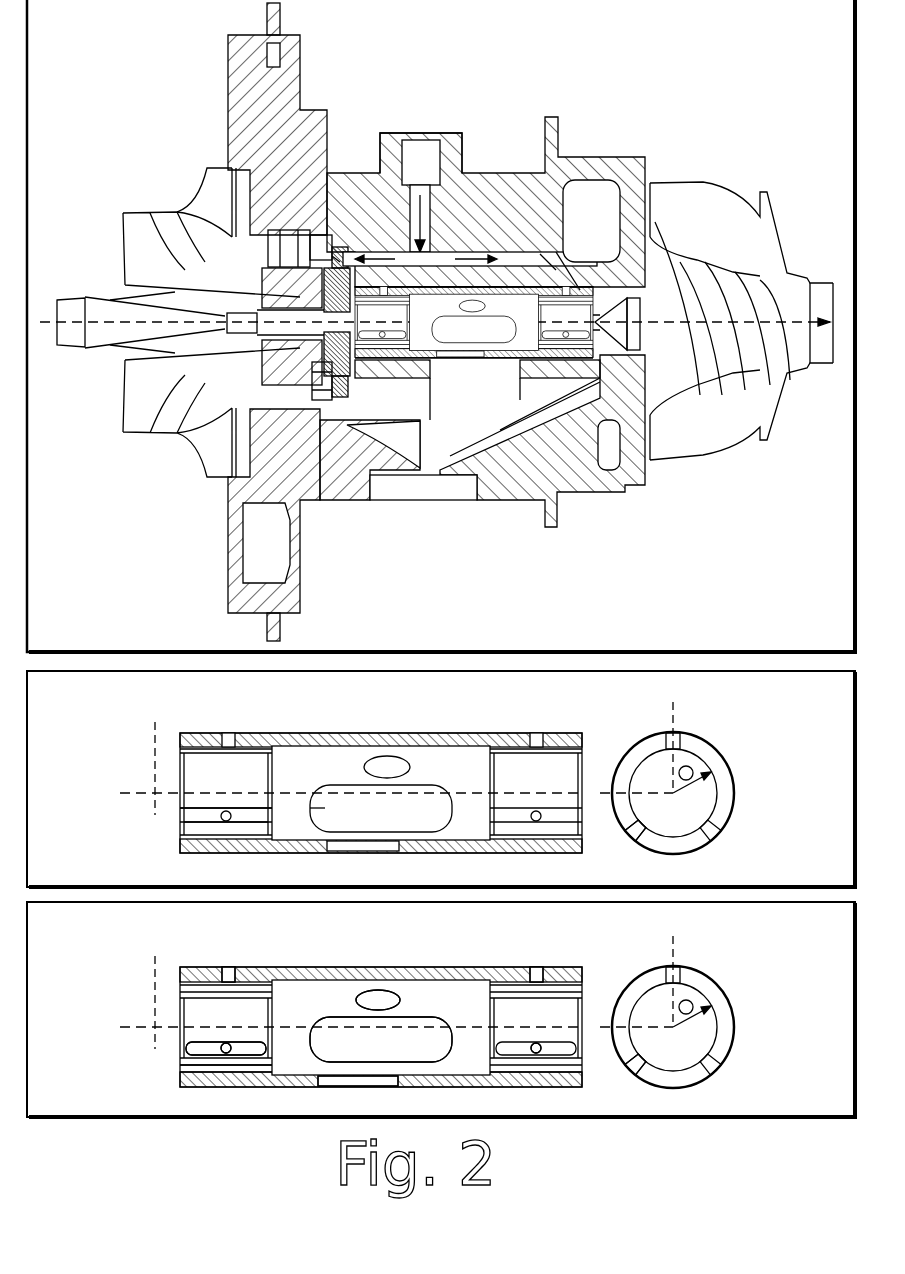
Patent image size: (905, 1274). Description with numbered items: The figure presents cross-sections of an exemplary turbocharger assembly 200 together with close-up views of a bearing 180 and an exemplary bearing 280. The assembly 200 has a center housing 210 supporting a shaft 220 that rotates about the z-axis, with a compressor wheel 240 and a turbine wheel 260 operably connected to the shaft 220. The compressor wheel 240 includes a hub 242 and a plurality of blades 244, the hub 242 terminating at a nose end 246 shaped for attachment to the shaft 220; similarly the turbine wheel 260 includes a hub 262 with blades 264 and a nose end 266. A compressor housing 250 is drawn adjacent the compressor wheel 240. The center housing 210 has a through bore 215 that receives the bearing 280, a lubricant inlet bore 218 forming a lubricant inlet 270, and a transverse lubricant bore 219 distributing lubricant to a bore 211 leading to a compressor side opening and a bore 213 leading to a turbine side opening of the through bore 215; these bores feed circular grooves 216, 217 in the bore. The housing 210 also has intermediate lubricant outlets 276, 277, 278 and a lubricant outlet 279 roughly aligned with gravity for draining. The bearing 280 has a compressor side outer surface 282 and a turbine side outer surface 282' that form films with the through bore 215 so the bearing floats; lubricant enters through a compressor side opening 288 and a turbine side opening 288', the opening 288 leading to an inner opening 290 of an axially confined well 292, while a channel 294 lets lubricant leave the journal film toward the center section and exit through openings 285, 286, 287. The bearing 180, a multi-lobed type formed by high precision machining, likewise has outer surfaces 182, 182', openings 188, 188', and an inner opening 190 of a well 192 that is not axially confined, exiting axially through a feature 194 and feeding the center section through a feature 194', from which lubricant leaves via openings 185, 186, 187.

The turbocharger assembly 200 is at (172, 62).
The compressor wheel 240 is at (125, 158).
The blades 244 is at (171, 258).
The hub 242 is at (209, 308).
The nose end 246 is at (63, 355).
The compressor housing 250 is at (232, 130).
The center housing 210 is at (389, 220).
The bore 211 is at (410, 262).
The through bore 215 is at (345, 258).
The circular groove 216 is at (378, 372).
The lubricant inlet 270 is at (433, 122).
The lubricant inlet bore 218 is at (439, 168).
The transverse lubricant bore 219 is at (545, 240).
The bore 213 is at (557, 228).
The shaft 220 is at (324, 333).
The intermediate lubricant outlet 276 is at (352, 385).
The circular groove 217 is at (522, 370).
The exemplary bearing 280 is at (447, 365).
The intermediate lubricant outlet 278 is at (438, 380).
The intermediate lubricant outlet 277 is at (598, 388).
The lubricant outlet 279 is at (450, 525).
The turbine wheel 260 is at (718, 152).
The blades 264 is at (734, 236).
The hub 262 is at (736, 308).
The nose end 266 is at (826, 368).
The bearing 180 is at (387, 706).
The compressor side outer surface 182 is at (192, 717).
The turbine side outer surface 182' is at (605, 718).
The opening 185 is at (378, 853).
The opening 186 is at (340, 793).
The opening 187 is at (405, 767).
The compressor side opening 188 is at (643, 848).
The turbine side opening 188' is at (505, 760).
The inner opening 190 is at (226, 812).
The well 192 is at (198, 823).
The feature 194 is at (424, 837).
The feature 194' is at (348, 817).
The compressor side outer surface 282 is at (192, 951).
The turbine side outer surface 282' is at (605, 952).
The opening 285 is at (378, 1087).
The opening 286 is at (340, 1027).
The opening 287 is at (405, 1001).
The compressor side opening 288 is at (643, 1082).
The turbine side opening 288' is at (505, 993).
The inner opening 290 is at (226, 1046).
The well 292 is at (183, 1049).
The channel 294 is at (190, 1066).